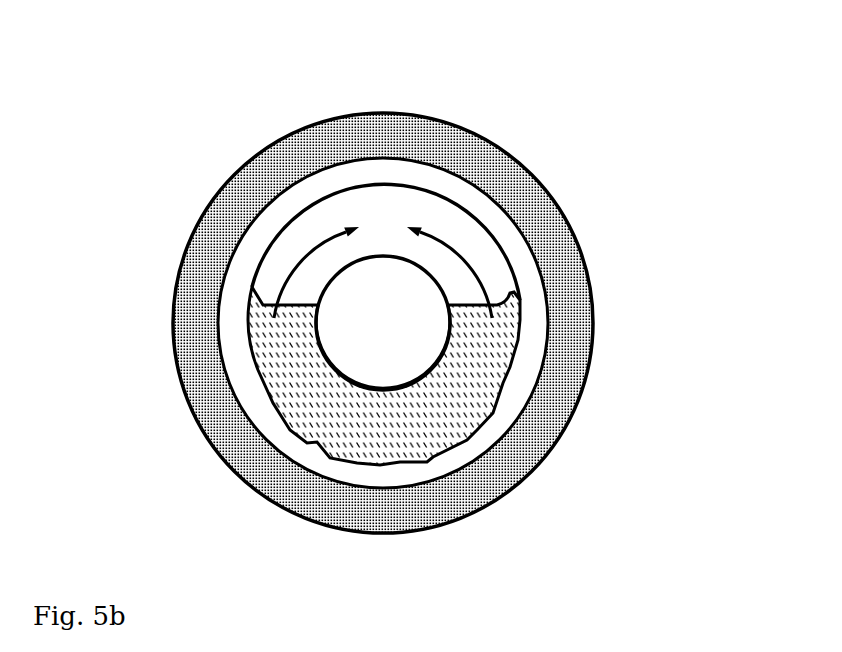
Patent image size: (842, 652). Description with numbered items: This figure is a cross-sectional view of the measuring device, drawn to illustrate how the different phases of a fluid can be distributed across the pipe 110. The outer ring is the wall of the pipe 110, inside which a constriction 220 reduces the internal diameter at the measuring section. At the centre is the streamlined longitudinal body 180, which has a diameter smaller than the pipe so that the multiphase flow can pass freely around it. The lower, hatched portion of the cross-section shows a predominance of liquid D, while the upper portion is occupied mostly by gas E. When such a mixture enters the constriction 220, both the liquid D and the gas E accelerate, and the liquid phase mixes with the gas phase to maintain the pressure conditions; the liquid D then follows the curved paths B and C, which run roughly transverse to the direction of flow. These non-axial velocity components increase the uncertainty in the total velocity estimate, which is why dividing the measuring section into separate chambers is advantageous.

The pipe 110 is at (527, 203).
The constriction 220 is at (402, 175).
The longitudinal body 180 is at (388, 338).
The liquid D is at (285, 385).
The path C is at (298, 258).
The path B is at (468, 256).
The gas E is at (405, 207).